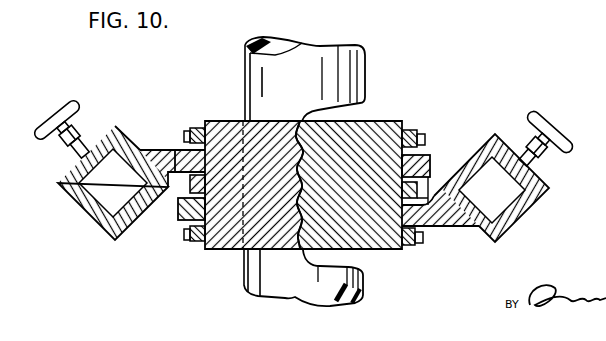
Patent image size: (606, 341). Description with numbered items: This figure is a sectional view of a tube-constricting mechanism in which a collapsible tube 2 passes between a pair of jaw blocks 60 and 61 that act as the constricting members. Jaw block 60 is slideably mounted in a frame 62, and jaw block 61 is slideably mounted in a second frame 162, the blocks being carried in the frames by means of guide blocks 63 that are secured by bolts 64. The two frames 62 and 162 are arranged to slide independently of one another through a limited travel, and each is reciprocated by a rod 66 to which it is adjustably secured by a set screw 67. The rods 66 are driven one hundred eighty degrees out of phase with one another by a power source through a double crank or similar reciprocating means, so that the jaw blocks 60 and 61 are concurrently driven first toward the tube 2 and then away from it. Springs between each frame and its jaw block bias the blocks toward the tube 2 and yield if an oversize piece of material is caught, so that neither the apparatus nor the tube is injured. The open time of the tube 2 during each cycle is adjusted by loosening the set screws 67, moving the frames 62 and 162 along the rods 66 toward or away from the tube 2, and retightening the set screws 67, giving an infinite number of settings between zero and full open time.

The collapsible tube 2 is at (354, 70).
The jaw block 60 is at (373, 122).
The jaw block 61 is at (224, 250).
The frame 62 is at (178, 215).
The guide block 63 is at (196, 128).
The bolt 64 is at (183, 133).
The rod 66 is at (75, 198).
The set screw 67 is at (56, 114).
The frame 162 is at (173, 148).